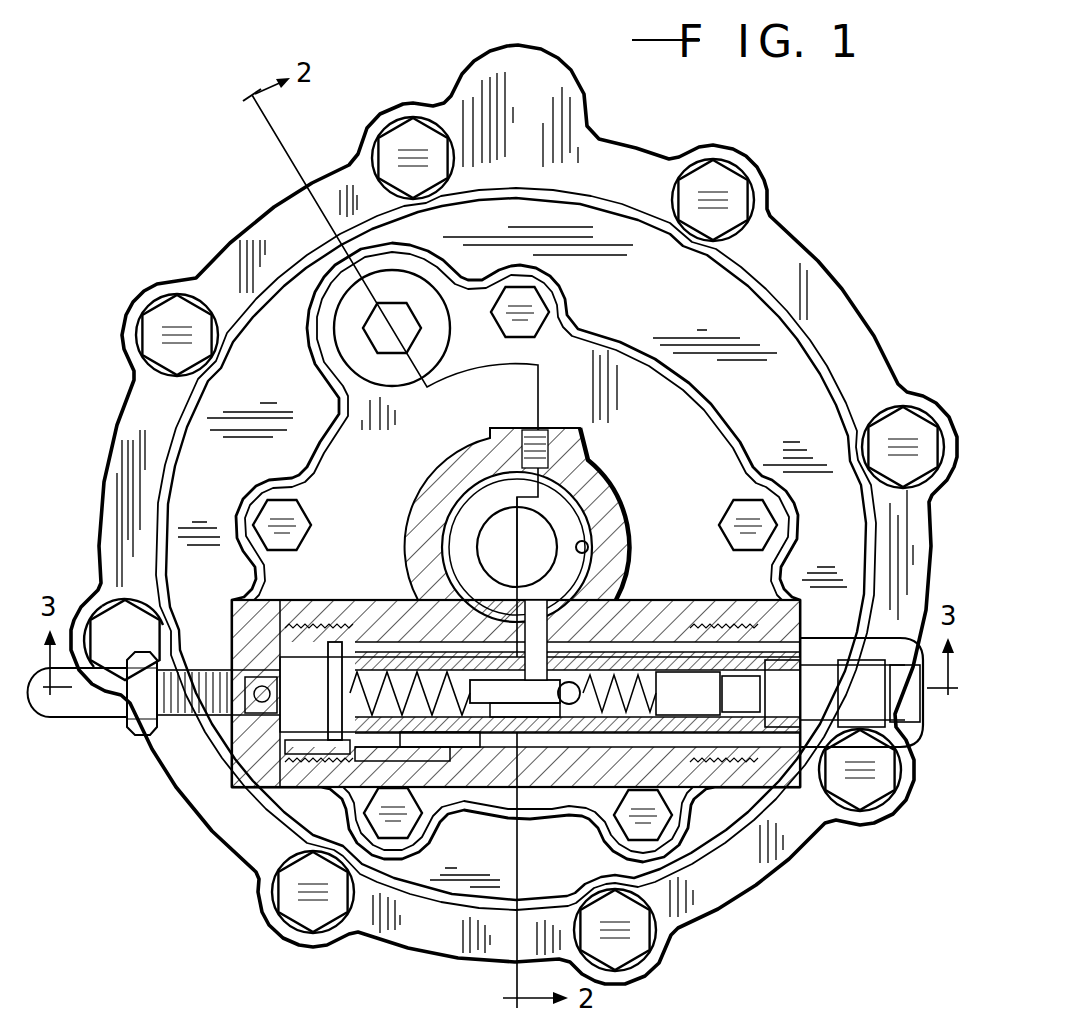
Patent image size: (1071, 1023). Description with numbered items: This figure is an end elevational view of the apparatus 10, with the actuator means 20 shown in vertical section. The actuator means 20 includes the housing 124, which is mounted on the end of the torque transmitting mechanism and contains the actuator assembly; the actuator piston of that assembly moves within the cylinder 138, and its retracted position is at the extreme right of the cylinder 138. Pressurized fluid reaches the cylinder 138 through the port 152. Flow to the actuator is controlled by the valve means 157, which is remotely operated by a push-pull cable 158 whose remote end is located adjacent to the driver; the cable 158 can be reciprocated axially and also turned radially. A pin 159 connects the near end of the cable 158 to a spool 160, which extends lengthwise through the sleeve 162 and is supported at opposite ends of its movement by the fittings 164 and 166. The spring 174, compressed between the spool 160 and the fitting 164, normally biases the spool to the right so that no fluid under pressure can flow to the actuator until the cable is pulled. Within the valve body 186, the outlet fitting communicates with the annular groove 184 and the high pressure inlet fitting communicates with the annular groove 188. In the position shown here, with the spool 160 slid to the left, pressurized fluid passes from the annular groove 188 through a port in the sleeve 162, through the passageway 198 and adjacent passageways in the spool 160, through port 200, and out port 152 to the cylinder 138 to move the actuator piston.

The apparatus 10 is at (852, 152).
The actuator means 20 is at (636, 506).
The housing 124 is at (606, 484).
The cylinder 138 is at (590, 547).
The port 152 is at (584, 566).
The valve means 157 is at (643, 604).
The push-pull cable 158 is at (228, 746).
The pin 159 is at (257, 714).
The spool 160 is at (312, 795).
The sleeve 162 is at (441, 748).
The fitting 164 is at (246, 608).
The fitting 166 is at (806, 772).
The spring 174 is at (330, 693).
The annular groove 184 is at (350, 770).
The valve body 186 is at (512, 557).
The annular groove 188 is at (507, 762).
The passageway 198 is at (470, 680).
The port 200 is at (517, 590).